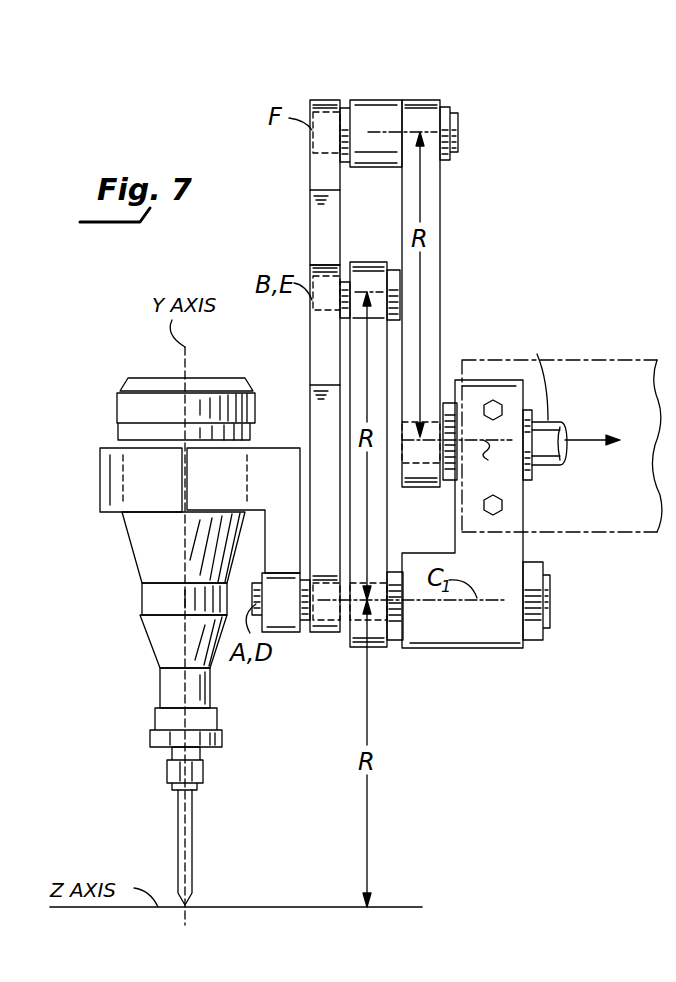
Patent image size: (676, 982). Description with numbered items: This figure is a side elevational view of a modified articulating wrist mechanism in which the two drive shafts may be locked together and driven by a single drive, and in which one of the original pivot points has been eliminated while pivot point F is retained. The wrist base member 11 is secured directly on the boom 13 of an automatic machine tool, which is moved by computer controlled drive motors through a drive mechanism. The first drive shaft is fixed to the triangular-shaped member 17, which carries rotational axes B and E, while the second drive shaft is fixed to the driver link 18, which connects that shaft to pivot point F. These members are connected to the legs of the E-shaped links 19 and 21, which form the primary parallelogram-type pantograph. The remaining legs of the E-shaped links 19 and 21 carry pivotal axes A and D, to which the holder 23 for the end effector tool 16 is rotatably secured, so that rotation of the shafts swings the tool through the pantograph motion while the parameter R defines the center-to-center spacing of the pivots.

The wrist base member 11 is at (437, 638).
The boom 13 is at (612, 533).
The end effector tool 16 is at (142, 555).
The triangular-shaped member 17 is at (385, 488).
The triangular-shaped member (driver link) 18 is at (440, 197).
The E-shaped link 19 is at (322, 348).
The E-shaped link 21 is at (320, 185).
The holder 23 is at (273, 455).